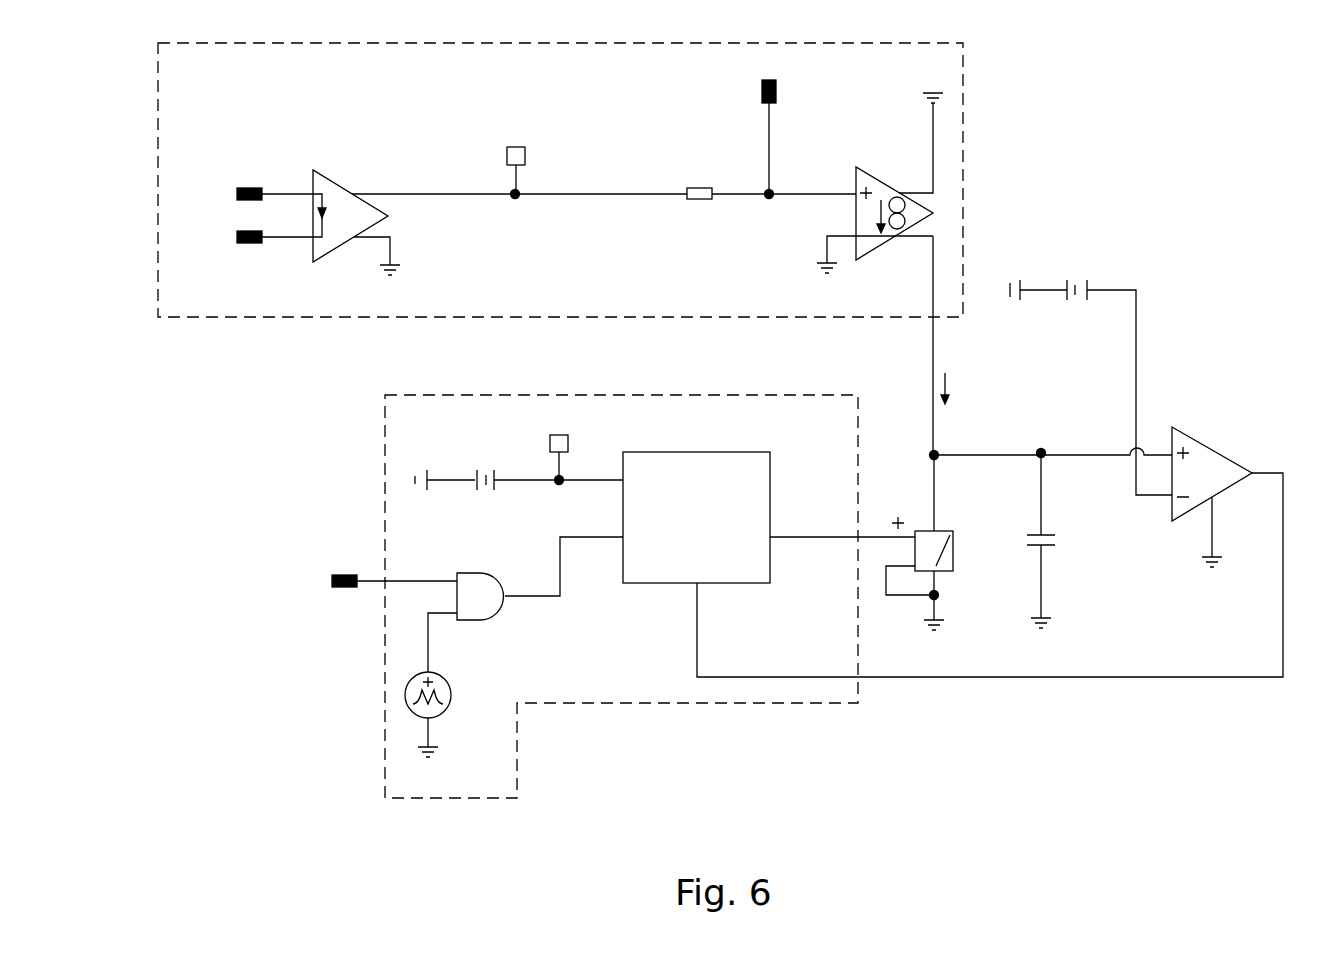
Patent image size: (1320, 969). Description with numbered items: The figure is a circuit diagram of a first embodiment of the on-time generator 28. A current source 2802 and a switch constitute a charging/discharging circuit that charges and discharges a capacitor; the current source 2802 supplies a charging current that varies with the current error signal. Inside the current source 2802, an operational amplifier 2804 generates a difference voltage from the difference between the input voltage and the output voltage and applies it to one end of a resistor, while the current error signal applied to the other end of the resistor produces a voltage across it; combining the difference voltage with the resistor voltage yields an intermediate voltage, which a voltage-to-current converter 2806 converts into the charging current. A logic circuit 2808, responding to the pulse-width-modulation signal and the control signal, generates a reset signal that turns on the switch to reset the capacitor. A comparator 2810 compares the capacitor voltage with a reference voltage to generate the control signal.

The on-time generator 28 is at (1222, 86).
The current source 2802 is at (963, 178).
The operational amplifier 2804 is at (338, 172).
The voltage-to-current converter 2806 is at (876, 165).
The logic circuit 2808 is at (678, 393).
The comparator 2810 is at (1214, 445).